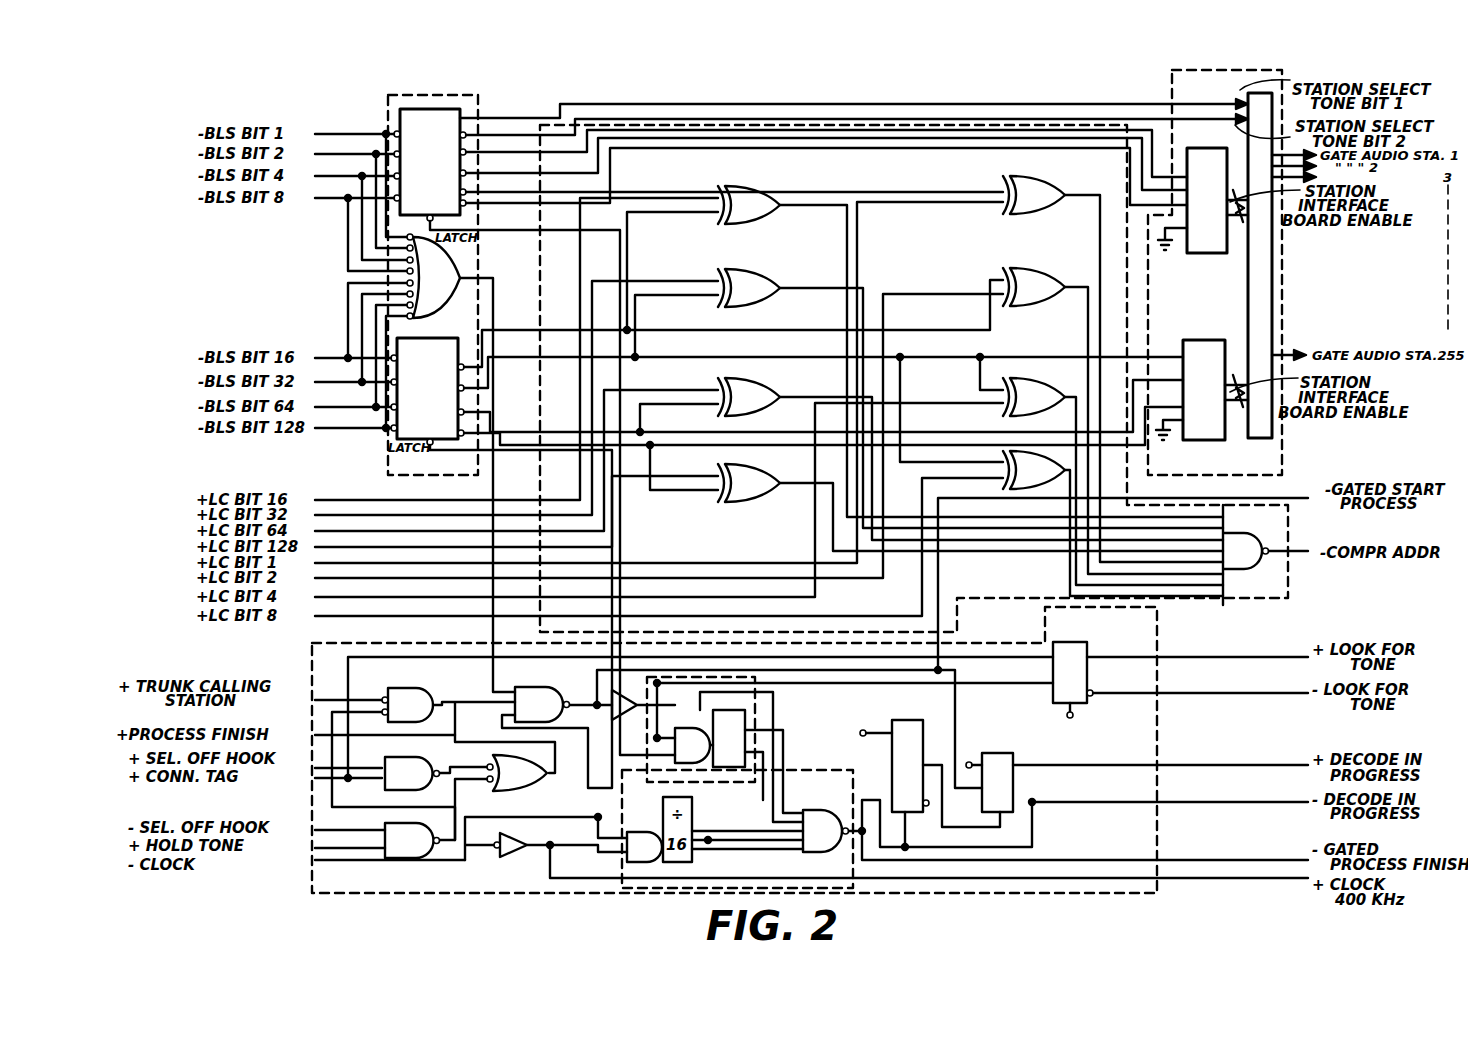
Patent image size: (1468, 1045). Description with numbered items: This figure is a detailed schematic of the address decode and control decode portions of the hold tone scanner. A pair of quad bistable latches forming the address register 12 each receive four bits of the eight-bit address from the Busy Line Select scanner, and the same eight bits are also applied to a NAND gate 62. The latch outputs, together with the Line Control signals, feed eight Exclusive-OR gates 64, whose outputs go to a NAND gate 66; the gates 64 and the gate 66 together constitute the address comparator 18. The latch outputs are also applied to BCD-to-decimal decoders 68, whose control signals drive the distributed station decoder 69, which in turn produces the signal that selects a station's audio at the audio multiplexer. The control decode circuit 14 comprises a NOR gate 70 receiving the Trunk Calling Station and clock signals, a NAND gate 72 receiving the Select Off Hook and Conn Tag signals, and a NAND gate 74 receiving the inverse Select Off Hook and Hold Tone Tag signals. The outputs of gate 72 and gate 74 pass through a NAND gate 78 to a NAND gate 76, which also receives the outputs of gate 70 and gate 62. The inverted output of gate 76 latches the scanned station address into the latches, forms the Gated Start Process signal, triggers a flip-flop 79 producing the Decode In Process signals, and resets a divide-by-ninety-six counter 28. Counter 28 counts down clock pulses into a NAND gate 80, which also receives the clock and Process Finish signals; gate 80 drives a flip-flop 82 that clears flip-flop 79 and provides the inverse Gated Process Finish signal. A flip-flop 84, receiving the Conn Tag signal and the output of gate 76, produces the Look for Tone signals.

The quad latch block 12 is at (447, 95).
The control decode circuit 14 is at (1157, 752).
The address comparator 18 is at (952, 125).
The divide-by-96 counter 28 is at (682, 714).
The NAND gate 62 is at (433, 297).
The Exclusive-OR gates 64 is at (1068, 466).
The NAND gate 66 is at (1243, 535).
The BCD-to-decimal decoders 68 is at (1210, 255).
The decoder 69 is at (1276, 302).
The NOR gate 70 is at (400, 688).
The NAND gate 72 is at (385, 790).
The NAND gate 74 is at (395, 858).
The NAND gate 76 is at (552, 690).
The NAND gate 78 is at (542, 785).
The flip-flop 79 is at (1013, 757).
The NAND gate 80 is at (825, 852).
The flip-flop 82 is at (892, 720).
The flip-flop 84 is at (1085, 705).